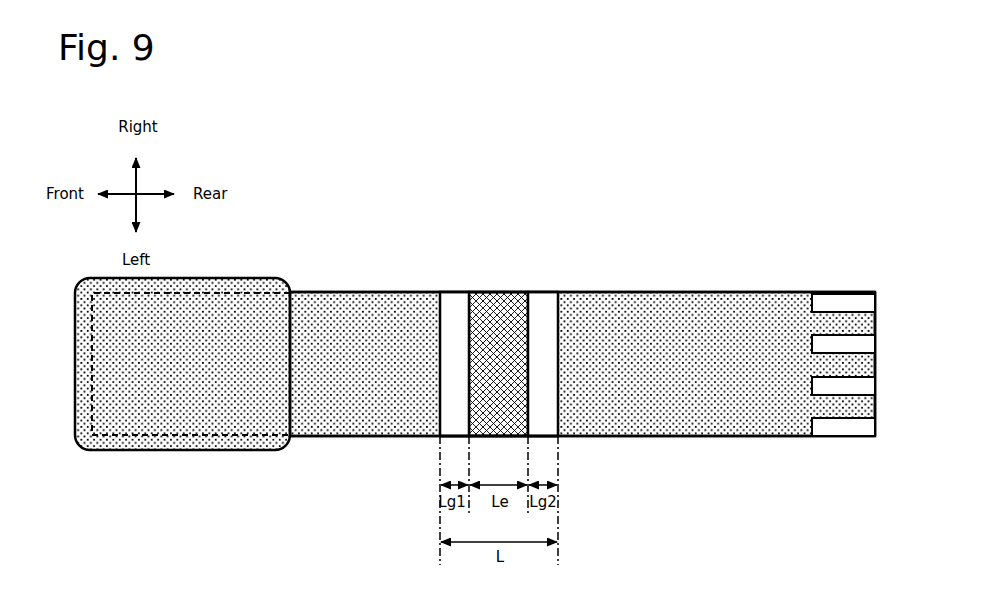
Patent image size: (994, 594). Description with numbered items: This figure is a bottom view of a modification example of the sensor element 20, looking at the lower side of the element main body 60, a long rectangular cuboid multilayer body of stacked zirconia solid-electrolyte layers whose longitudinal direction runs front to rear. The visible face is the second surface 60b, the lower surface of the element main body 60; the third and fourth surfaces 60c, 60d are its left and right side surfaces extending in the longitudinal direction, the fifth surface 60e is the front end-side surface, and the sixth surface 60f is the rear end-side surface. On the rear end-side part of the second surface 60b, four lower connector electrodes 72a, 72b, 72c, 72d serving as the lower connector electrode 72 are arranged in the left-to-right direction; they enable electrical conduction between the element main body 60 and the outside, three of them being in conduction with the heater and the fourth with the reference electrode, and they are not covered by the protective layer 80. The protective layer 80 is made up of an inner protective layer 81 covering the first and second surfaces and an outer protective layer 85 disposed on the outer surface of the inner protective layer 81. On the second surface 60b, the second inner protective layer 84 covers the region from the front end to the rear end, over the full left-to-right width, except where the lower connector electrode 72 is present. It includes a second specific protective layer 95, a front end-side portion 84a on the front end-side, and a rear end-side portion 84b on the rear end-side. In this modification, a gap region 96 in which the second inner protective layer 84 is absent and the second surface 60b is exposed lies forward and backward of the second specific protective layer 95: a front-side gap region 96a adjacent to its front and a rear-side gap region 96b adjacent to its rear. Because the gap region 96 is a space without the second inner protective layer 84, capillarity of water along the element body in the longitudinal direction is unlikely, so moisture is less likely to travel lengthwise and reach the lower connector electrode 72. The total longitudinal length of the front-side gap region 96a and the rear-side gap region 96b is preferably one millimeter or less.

The sensor element 20 is at (746, 167).
The element main body 60 is at (721, 273).
The second surface 60b is at (452, 423).
The third surface 60c is at (662, 436).
The fourth surface 60d is at (655, 292).
The fifth surface 60e is at (92, 378).
The sixth surface 60f is at (875, 366).
The lower connector electrode 72 is at (870, 265).
The lower connector electrode 72a is at (866, 428).
The lower connector electrode 72b is at (866, 387).
The lower connector electrode 72c is at (866, 345).
The lower connector electrode 72d is at (866, 302).
The protective layer 80 is at (300, 158).
The inner protective layer 81 is at (388, 187).
The second inner protective layer 84 is at (424, 225).
The front end-side portion 84a is at (420, 316).
The rear end-side portion 84b is at (615, 318).
The outer protective layer 85 is at (316, 292).
The second specific protective layer 95 is at (500, 316).
The gap region 96 is at (460, 231).
The front-side gap region 96a is at (441, 291).
The rear-side gap region 96b is at (557, 291).